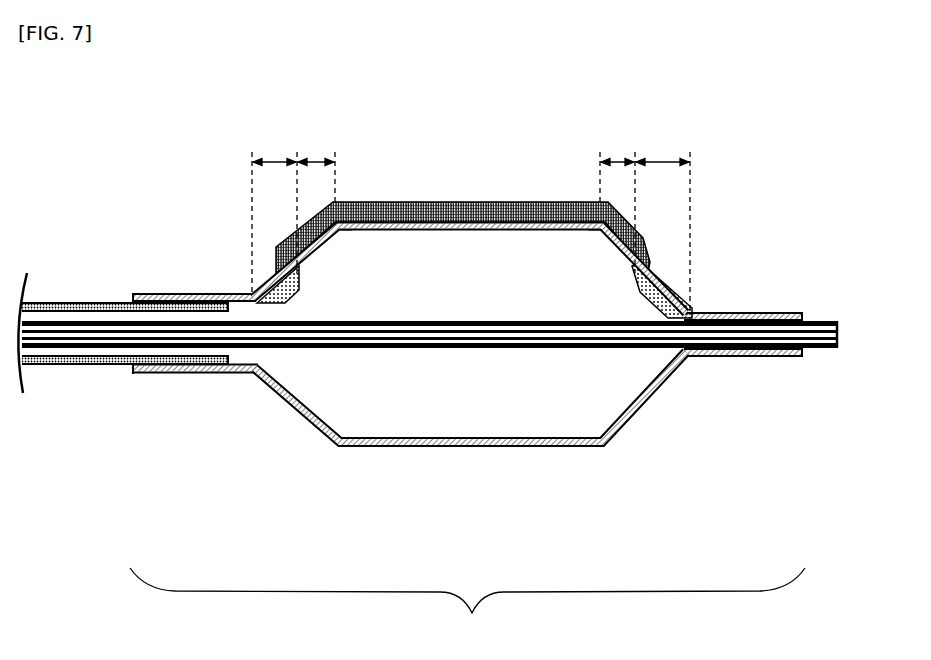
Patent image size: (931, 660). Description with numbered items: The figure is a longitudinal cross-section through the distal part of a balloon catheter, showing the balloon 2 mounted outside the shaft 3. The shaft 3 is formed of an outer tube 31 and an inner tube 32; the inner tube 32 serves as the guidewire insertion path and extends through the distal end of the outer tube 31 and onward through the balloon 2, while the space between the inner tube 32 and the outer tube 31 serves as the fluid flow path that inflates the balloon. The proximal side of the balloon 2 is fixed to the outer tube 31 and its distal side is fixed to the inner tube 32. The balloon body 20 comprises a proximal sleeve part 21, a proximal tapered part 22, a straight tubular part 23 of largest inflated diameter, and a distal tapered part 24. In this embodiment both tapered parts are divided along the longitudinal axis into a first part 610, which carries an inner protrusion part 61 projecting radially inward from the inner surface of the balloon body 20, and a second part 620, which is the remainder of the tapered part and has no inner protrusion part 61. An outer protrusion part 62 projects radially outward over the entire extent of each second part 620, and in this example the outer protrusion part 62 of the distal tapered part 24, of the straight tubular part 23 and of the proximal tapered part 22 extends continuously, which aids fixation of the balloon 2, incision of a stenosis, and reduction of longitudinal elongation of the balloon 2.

The balloon 2 is at (467, 608).
The shaft 3 is at (98, 300).
The balloon body 20 is at (775, 313).
The proximal sleeve part 21 is at (176, 384).
The proximal tapered part 22 is at (285, 396).
The straight tubular part 23 is at (473, 450).
The distal tapered part 24 is at (656, 392).
The outer tube 31 is at (72, 366).
The inner tube 32 is at (822, 354).
The inner protrusion part 61 is at (252, 292).
The outer protrusion part 62 is at (278, 246).
The first part 610 is at (272, 160).
The second part 620 is at (320, 160).